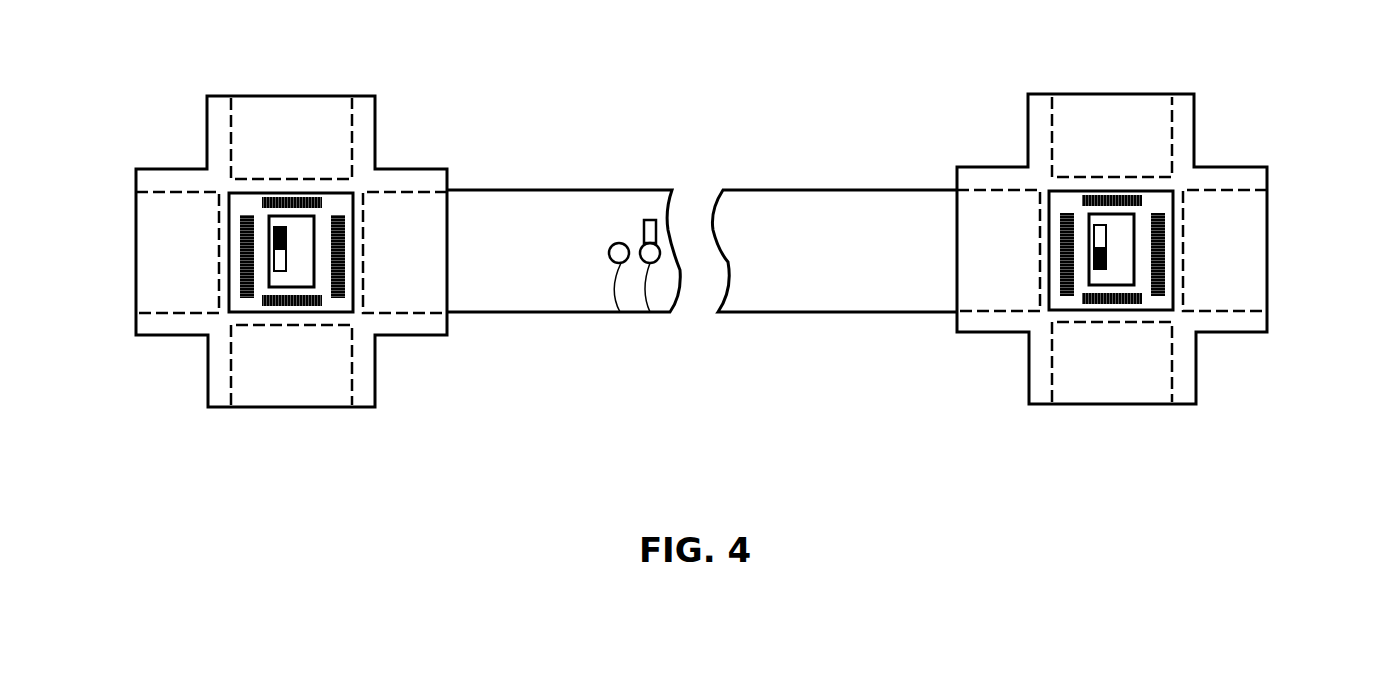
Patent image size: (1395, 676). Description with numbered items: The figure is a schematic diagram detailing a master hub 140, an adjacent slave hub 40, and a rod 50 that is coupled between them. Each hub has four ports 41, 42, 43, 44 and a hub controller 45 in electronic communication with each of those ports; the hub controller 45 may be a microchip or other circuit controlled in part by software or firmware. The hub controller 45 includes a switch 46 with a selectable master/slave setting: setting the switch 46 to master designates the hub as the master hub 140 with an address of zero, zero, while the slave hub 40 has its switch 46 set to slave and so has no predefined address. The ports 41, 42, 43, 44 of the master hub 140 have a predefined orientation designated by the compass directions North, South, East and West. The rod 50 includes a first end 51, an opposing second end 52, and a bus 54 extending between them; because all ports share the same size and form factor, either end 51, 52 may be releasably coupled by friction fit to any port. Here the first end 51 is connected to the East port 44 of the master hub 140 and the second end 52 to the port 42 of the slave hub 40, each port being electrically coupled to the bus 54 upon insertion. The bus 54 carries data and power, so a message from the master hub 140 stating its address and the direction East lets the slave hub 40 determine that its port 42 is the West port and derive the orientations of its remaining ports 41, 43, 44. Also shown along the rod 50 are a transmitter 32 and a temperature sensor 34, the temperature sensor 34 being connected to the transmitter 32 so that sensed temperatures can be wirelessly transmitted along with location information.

The slave hub 40 is at (1028, 152).
The master hub 140 is at (207, 160).
The port 41 is at (279, 408).
The port 42 is at (136, 287).
The port 43 is at (300, 96).
The port 44 is at (447, 265).
The hub controller 45 is at (350, 196).
The switch 46 is at (268, 278).
The rod 50 is at (595, 190).
The first end 51 is at (355, 273).
The second end 52 is at (1040, 277).
The bus 54 is at (762, 312).
The transmitter 32 is at (608, 253).
The temperature sensor 34 is at (660, 253).